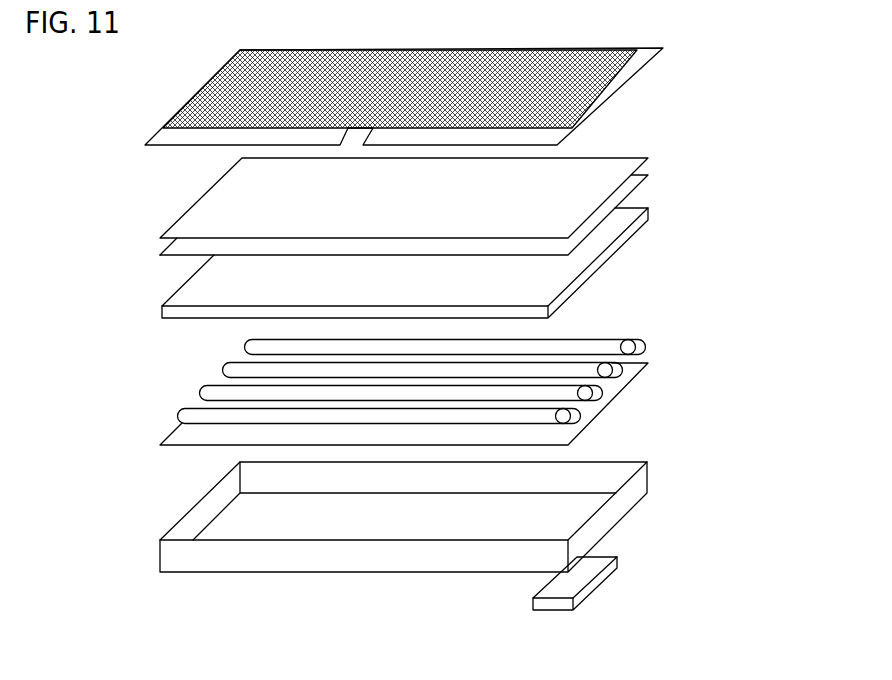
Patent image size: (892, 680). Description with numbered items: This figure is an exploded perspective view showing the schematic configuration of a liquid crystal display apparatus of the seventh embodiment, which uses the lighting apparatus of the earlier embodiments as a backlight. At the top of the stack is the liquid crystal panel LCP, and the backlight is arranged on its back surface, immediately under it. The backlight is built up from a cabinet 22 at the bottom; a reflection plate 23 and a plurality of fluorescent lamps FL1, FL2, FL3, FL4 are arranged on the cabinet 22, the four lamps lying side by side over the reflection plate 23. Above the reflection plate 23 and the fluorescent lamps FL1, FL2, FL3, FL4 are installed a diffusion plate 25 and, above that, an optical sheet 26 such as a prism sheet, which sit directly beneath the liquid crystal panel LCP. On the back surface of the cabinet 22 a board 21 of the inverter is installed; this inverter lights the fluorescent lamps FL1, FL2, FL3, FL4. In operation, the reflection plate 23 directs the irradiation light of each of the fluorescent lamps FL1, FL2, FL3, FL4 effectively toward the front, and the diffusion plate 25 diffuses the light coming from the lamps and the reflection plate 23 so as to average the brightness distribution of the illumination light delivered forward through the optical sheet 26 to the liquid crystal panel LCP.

The liquid crystal panel LCP is at (637, 80).
The optical sheet 26 is at (667, 145).
The diffusion plate 25 is at (647, 230).
The fluorescent lamp FL1 is at (445, 347).
The fluorescent lamp FL2 is at (423, 370).
The fluorescent lamp FL3 is at (401, 393).
The fluorescent lamp FL4 is at (379, 416).
The reflection plate 23 is at (598, 422).
The cabinet 22 is at (632, 508).
The board 21 is at (600, 587).